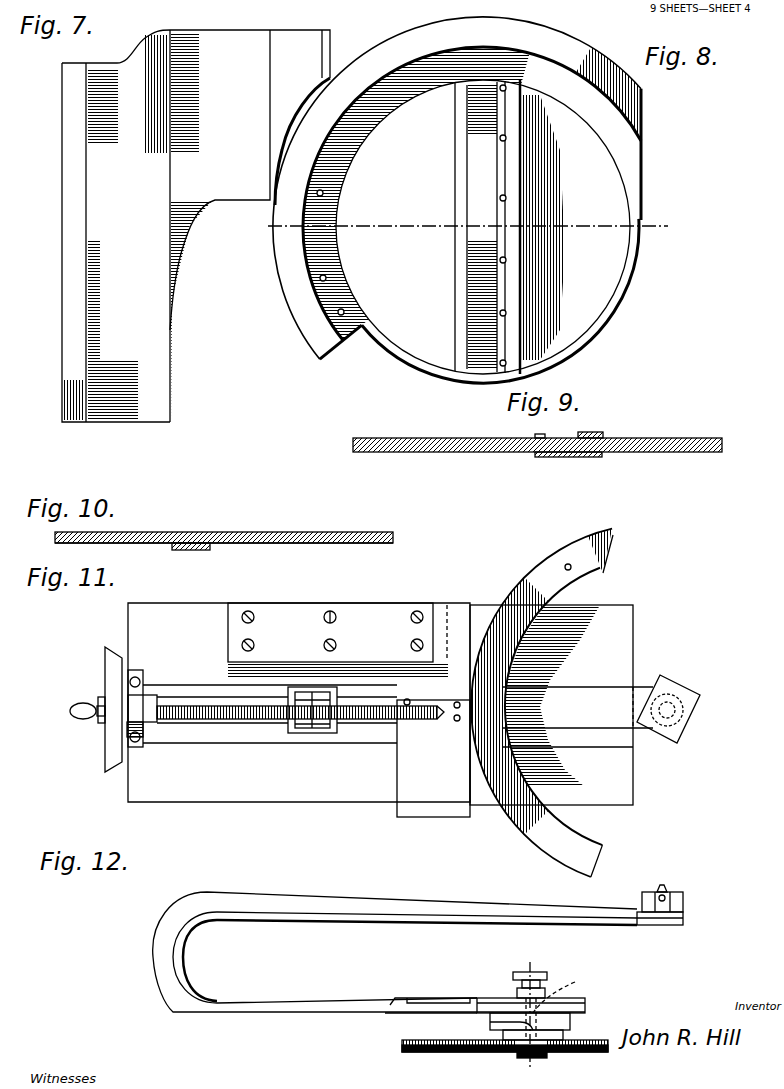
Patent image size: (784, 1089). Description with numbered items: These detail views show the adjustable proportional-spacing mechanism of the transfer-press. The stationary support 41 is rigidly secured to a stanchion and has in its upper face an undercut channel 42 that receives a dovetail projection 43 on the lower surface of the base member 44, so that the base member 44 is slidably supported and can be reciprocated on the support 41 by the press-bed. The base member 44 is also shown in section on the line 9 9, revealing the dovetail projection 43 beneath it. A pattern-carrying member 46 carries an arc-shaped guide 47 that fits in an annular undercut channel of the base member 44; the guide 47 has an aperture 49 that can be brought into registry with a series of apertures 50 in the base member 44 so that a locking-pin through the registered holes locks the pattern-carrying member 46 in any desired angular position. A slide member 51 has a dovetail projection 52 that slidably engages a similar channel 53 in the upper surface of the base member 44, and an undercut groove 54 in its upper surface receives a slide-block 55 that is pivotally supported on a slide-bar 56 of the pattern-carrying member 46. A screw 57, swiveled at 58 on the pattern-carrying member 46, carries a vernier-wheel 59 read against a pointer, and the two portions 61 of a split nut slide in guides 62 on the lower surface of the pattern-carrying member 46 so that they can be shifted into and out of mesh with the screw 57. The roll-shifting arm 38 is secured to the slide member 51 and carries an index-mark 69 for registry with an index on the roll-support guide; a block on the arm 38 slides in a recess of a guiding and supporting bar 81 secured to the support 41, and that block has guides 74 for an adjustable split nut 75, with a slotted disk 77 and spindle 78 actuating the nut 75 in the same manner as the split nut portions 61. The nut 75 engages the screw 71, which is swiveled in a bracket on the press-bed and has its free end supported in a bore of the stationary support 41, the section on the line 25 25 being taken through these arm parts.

In FIG. 8, the section line 9 is at (464, 225).
In FIG. 12, the section line 25 is at (530, 1016).
In FIG. 12, the roll-shifting arm 38 is at (588, 1002).
In FIG. 7, the support 41 is at (238, 193).
In FIG. 7, the undercut channel 42 is at (120, 410).
In FIG. 9, the dovetail projection 43 is at (590, 457).
In FIG. 8, the base member 44 is at (603, 267).
In FIG. 9, the base member 44 is at (660, 440).
In FIG. 8, the pattern-carrying member 46 is at (622, 142).
In FIG. 11, the pattern-carrying member 46 is at (613, 617).
In FIG. 11, the arc-shaped guide 47 is at (553, 697).
In FIG. 11, the aperture 49 is at (566, 563).
In FIG. 8, the apertures 50 is at (338, 314).
In FIG. 10, the slide member 51 is at (318, 544).
In FIG. 12, the slide member 51 is at (412, 987).
In FIG. 10, the dovetail projection 52 is at (203, 550).
In FIG. 8, the channel 53 is at (480, 370).
In FIG. 10, the undercut groove 54 is at (224, 522).
In FIG. 12, the undercut groove 54 is at (440, 998).
In FIG. 11, the slide-block 55 is at (685, 693).
In FIG. 11, the slide-bar 56 is at (608, 708).
In FIG. 11, the screw 57 is at (225, 713).
In FIG. 11, the swivel 58 is at (137, 705).
In FIG. 11, the vernier-wheel 59 is at (113, 657).
In FIG. 11, the split nut portions 61 is at (313, 703).
In FIG. 11, the guides 62 is at (323, 727).
In FIG. 12, the index-mark 69 is at (683, 922).
In FIG. 12, the screw 71 is at (440, 1052).
In FIG. 12, the guides 74 is at (573, 1032).
In FIG. 12, the adjustable split nut 75 is at (518, 1052).
In FIG. 12, the slotted disk 77 is at (492, 1024).
In FIG. 12, the spindle 78 is at (561, 988).
In FIG. 12, the guiding and supporting bar 81 is at (590, 1017).